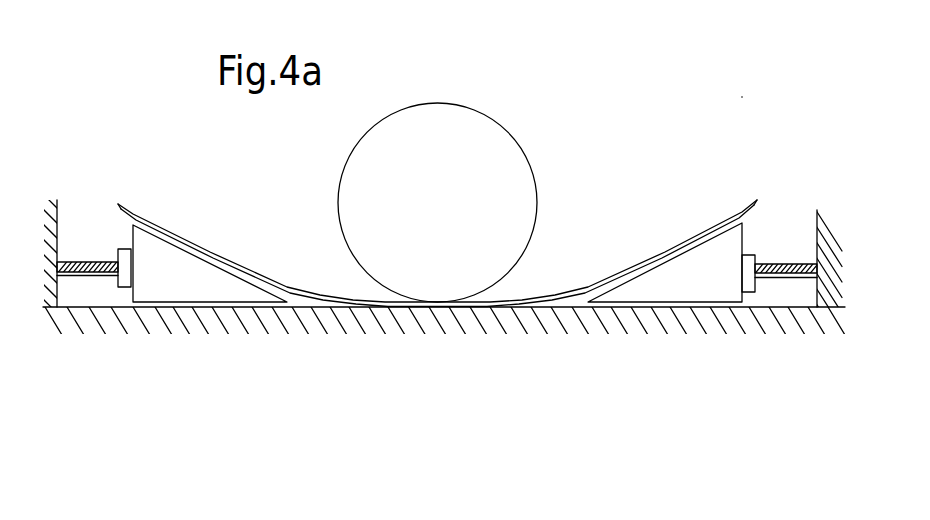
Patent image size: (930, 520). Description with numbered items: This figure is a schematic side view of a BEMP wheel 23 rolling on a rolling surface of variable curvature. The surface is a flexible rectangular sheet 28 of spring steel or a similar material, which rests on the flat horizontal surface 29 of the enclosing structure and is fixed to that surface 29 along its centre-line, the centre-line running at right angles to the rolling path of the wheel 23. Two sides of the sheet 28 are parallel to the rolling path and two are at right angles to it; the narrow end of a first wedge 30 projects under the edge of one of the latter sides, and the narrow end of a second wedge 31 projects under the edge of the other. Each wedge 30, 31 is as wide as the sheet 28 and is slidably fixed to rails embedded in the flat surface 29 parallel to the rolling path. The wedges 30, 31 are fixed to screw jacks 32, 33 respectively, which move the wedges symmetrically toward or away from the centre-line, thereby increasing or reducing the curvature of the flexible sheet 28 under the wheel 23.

The wheel 23 is at (520, 138).
The flexible rectangular sheet 28 is at (585, 285).
The flat horizontal surface 29 is at (783, 307).
The first wedge 30 is at (180, 263).
The second wedge 31 is at (705, 255).
The screw jack 32 is at (118, 262).
The screw jack 33 is at (760, 267).